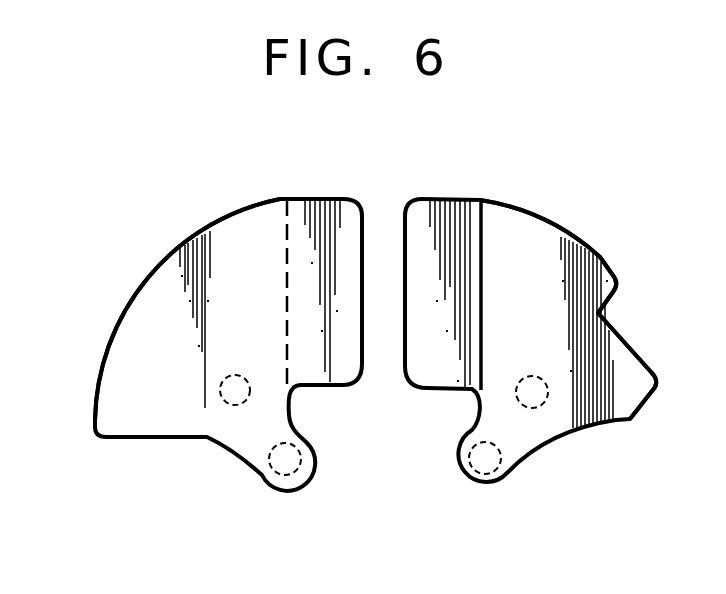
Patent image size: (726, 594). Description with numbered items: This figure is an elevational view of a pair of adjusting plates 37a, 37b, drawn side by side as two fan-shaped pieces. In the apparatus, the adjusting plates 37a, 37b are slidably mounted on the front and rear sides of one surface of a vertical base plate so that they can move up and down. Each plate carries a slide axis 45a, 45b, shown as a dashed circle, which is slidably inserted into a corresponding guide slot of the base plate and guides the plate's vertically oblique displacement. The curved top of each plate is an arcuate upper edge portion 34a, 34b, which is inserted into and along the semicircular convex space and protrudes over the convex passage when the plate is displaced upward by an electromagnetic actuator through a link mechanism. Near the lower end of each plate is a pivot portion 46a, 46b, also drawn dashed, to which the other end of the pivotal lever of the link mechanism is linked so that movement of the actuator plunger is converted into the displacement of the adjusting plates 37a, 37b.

The arcuate upper edge portion 34a is at (532, 242).
The arcuate upper edge portion 34b is at (222, 245).
The adjusting plate 37a is at (599, 257).
The adjusting plate 37b is at (119, 319).
The slide axis 45a is at (540, 406).
The slide axis 45b is at (221, 394).
The pivot portion 46a is at (507, 477).
The pivot portion 46b is at (262, 475).